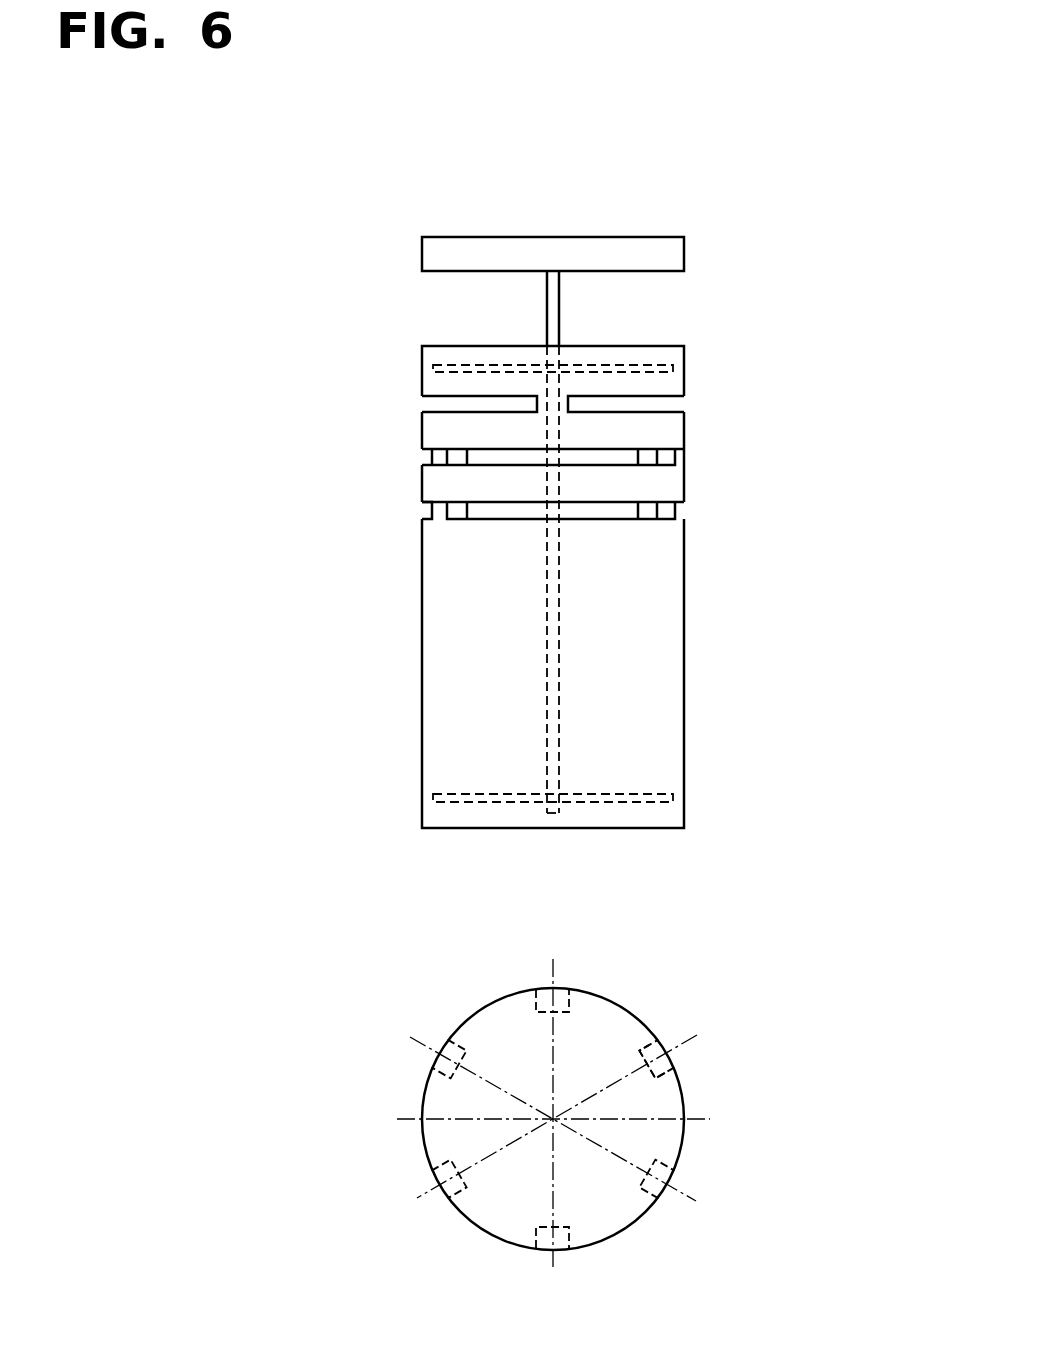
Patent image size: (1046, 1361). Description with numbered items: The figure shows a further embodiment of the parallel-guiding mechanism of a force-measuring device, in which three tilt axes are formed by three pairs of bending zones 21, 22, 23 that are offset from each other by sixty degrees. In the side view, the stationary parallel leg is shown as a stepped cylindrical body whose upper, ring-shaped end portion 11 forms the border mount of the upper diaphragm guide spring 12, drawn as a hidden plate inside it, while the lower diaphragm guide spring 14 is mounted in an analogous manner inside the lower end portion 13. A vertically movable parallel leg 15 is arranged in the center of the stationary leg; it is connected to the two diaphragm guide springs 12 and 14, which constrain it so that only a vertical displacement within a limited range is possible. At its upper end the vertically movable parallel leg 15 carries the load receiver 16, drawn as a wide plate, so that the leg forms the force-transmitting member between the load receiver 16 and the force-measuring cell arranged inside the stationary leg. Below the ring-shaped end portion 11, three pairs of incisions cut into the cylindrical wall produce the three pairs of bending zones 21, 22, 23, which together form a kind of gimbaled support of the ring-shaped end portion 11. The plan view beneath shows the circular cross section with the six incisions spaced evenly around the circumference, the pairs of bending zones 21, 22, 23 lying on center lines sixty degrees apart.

The ring-shaped end portion 11 is at (440, 382).
The upper diaphragm guide spring 12 is at (647, 367).
The lower end portion 13 is at (648, 815).
The lower diaphragm guide spring 14 is at (647, 796).
The vertically movable parallel leg 15 is at (553, 313).
The load receiver 16 is at (605, 258).
The pair of bending zones 21 is at (553, 403).
The pair of bending zones 22 is at (437, 459).
The pair of bending zones 23 is at (437, 511).